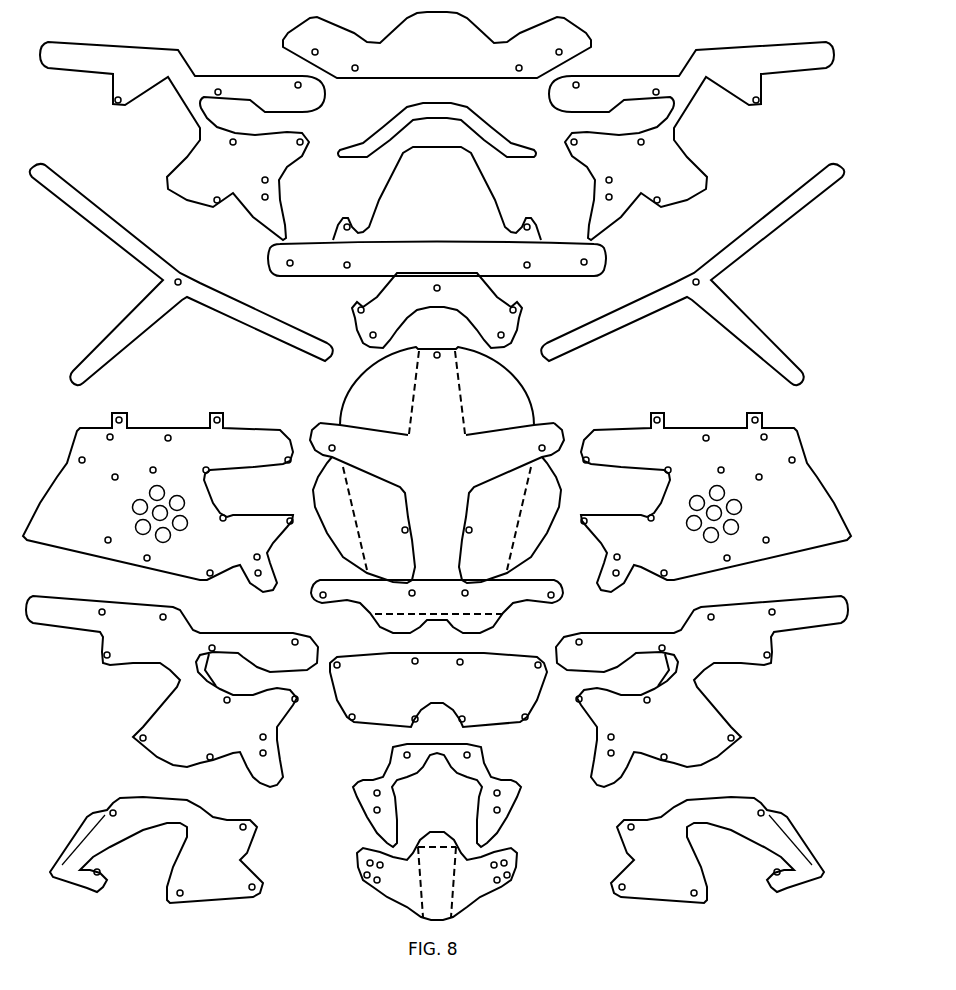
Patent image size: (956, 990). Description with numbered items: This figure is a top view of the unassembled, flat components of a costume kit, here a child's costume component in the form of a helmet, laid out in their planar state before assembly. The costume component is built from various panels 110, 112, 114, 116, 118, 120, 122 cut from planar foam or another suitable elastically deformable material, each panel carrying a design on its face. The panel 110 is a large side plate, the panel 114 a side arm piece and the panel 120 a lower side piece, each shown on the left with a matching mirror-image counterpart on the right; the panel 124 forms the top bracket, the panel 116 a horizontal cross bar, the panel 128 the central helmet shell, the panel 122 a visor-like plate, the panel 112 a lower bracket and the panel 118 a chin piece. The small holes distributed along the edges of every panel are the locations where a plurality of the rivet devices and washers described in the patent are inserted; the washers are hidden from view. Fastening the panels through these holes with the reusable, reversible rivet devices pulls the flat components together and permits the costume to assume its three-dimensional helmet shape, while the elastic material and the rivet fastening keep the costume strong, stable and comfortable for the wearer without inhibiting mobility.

The panel 110 is at (200, 512).
The panel 112 is at (520, 813).
The panel 114 is at (266, 716).
The panel 116 is at (608, 258).
The panel 118 is at (477, 893).
The panel 120 is at (217, 893).
The panel 122 is at (492, 714).
The top bracket 124 is at (596, 37).
The helmet shell 128 is at (508, 403).